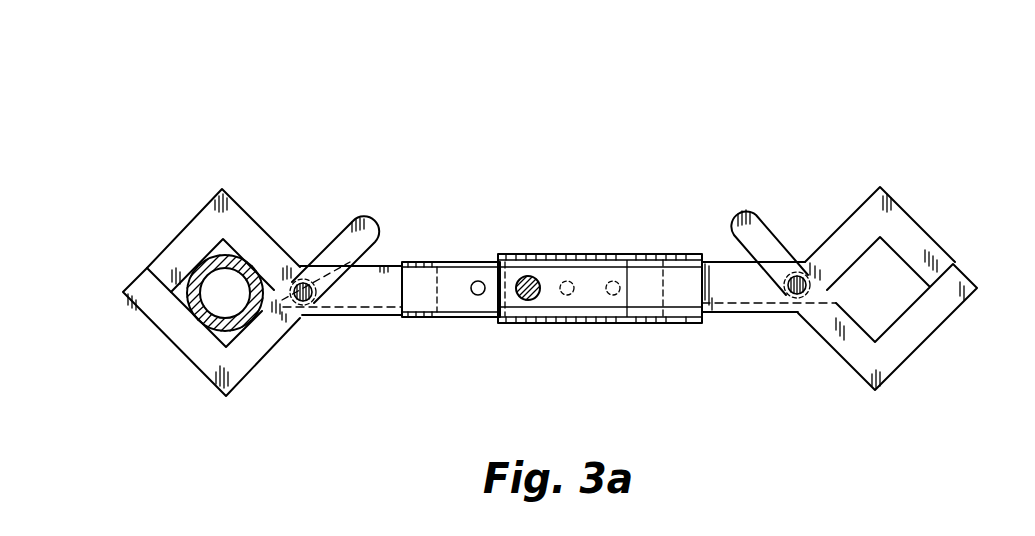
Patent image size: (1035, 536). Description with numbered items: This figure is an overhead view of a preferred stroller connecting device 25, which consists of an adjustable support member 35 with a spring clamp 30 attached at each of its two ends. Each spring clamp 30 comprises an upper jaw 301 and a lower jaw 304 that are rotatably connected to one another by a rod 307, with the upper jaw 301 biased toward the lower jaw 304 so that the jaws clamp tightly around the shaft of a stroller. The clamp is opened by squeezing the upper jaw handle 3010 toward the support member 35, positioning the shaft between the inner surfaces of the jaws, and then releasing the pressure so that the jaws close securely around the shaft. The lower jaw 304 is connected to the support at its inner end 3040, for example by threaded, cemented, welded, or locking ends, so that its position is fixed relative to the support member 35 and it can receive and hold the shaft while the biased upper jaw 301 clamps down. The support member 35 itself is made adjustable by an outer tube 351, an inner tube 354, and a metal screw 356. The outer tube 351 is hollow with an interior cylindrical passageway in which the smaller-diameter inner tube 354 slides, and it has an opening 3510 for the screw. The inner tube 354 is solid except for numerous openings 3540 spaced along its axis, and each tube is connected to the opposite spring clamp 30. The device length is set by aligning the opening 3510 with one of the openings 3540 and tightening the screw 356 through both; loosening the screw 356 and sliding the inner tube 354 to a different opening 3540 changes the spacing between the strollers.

The connecting device 25 is at (608, 143).
The spring clamp 30 is at (365, 165).
The upper jaw 301 is at (248, 208).
The lower jaw 304 is at (226, 398).
The upper jaw handle 3010 is at (363, 215).
The rod 307 is at (312, 288).
The inner end of lower jaw 3040 is at (340, 318).
The support member 35 is at (713, 367).
The inner tube 354 is at (417, 318).
The outer tube 351 is at (637, 254).
The opening of outer tube 3510 is at (529, 301).
The openings of inner tube 3540 is at (480, 281).
The metal screw 356 is at (519, 300).